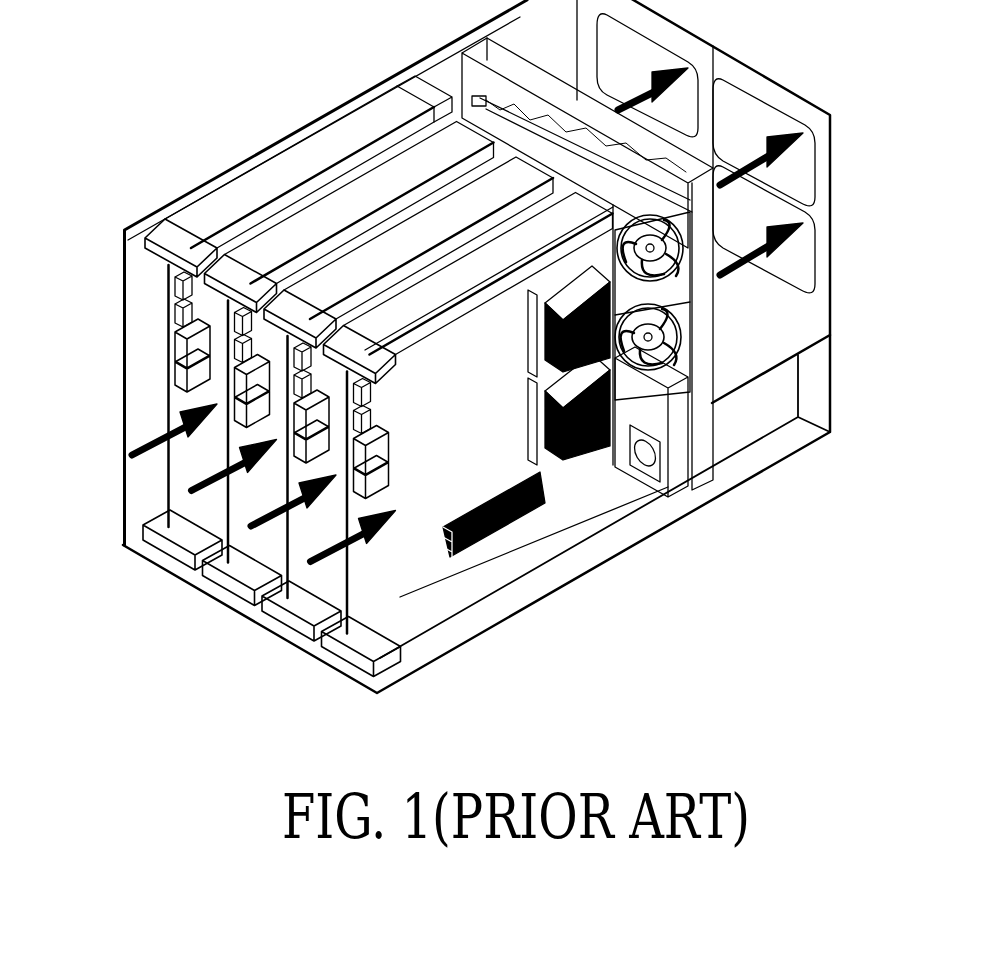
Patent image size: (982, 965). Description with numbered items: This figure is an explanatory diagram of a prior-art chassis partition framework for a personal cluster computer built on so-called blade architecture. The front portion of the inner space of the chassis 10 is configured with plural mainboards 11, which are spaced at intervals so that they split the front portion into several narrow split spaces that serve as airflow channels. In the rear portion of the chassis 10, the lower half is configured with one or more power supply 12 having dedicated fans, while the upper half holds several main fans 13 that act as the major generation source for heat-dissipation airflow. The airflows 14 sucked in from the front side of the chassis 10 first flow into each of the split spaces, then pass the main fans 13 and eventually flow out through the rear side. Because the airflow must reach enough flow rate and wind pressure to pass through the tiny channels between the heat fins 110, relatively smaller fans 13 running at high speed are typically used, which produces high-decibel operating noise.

The chassis 10 is at (124, 340).
The mainboard 11 is at (181, 462).
The power supply 12 is at (682, 452).
The main fan 13 is at (690, 233).
The airflow 14 is at (250, 522).
The heat fin 110 is at (571, 457).